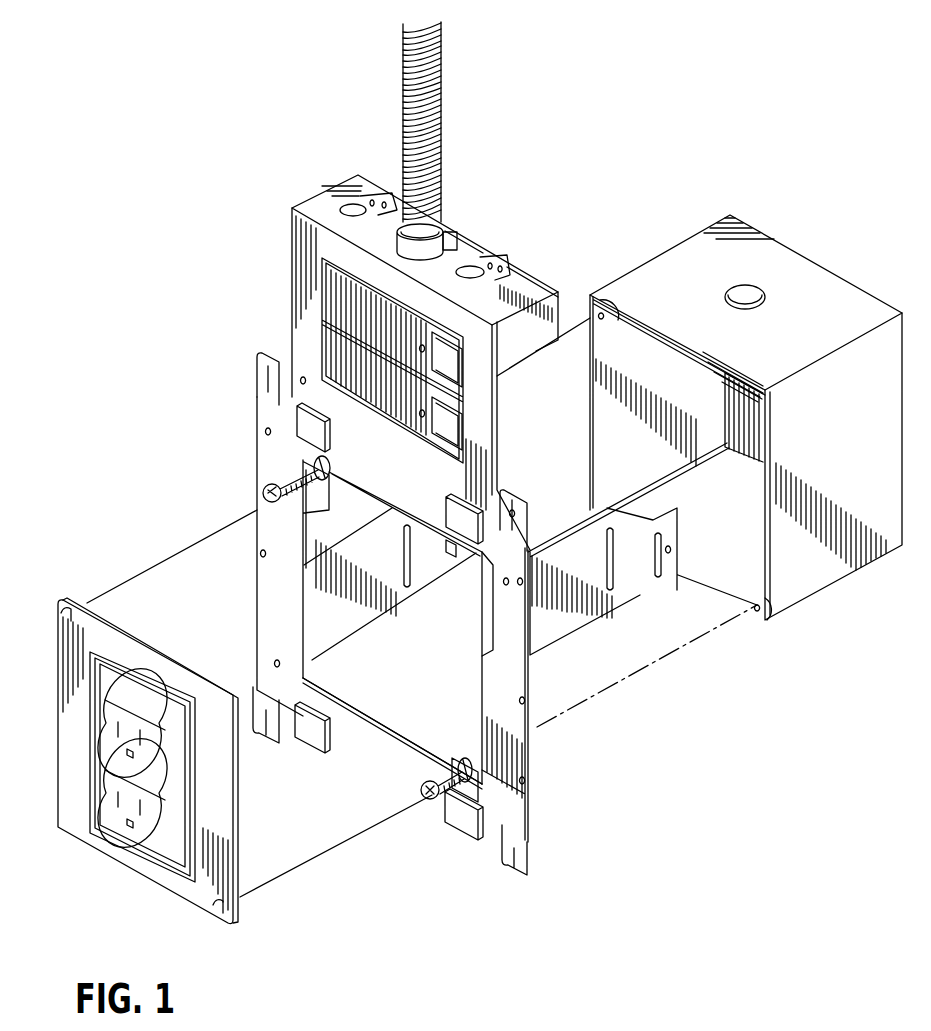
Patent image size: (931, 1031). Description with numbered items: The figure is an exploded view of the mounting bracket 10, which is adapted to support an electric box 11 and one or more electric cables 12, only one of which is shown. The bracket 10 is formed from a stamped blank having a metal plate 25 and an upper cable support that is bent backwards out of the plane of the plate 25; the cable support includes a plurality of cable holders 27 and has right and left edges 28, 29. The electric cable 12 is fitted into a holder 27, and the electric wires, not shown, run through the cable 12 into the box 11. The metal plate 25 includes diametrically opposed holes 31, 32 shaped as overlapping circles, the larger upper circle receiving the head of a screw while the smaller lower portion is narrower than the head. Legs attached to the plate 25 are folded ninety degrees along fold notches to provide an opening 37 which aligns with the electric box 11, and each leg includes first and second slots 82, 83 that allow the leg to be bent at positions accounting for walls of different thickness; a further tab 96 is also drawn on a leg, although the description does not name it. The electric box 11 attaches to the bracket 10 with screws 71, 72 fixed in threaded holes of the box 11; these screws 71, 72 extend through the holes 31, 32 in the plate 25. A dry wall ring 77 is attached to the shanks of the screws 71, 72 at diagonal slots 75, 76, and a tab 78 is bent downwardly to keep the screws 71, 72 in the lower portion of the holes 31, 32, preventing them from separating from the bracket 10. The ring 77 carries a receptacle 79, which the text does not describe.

The bracket 10 is at (262, 256).
The electric box 11 is at (808, 263).
The electric cable 12 is at (444, 162).
The metal plate portion 25 is at (424, 495).
The cable holder 27 is at (356, 200).
The right edge 28 is at (302, 200).
The left edge 29 is at (545, 316).
The hole 31 is at (328, 468).
The hole 32 is at (470, 745).
The opening 37 is at (336, 704).
The screw 71 is at (294, 481).
The screw 72 is at (432, 786).
The diagonal slot 75 is at (66, 622).
The diagonal slot 76 is at (216, 915).
The dry wall ring 77 is at (145, 632).
The tab 78 is at (452, 755).
The receptacle 79 is at (150, 840).
The first slot 82 is at (452, 548).
The second slot 83 is at (412, 560).
The mounting tab 96 is at (669, 547).